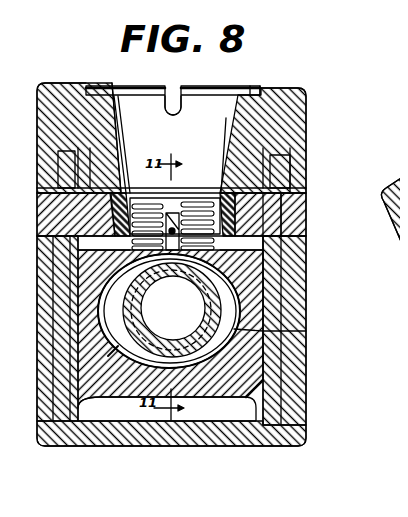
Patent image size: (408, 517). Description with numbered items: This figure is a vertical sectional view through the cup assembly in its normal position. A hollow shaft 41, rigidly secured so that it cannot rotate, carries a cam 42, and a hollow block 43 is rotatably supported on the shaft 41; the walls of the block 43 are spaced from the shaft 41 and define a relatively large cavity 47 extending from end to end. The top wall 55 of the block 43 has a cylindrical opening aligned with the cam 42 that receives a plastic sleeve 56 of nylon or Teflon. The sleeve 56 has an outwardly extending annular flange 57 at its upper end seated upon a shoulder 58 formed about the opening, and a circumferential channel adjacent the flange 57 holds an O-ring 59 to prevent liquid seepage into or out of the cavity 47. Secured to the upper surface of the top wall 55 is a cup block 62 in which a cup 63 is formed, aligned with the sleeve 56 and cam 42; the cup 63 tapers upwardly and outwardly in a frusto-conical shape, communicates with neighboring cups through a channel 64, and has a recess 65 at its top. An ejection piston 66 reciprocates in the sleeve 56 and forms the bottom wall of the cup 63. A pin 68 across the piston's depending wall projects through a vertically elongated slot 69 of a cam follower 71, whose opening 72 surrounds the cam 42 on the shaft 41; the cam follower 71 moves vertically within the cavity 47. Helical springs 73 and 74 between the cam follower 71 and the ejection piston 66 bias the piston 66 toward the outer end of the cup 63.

The hollow tube or shaft 41 is at (209, 403).
The cam 42 is at (299, 323).
The hollow casing or block 43 is at (299, 274).
The cavity 47 is at (199, 400).
The top wall 55 is at (299, 210).
The sleeve or insert 56 is at (83, 214).
The annular flange 57 is at (82, 168).
The shoulder 58 is at (265, 168).
The O-ring 59 is at (31, 186).
The cup block 62 is at (293, 118).
The cup or receptacle 63 is at (197, 98).
The channel 64 is at (163, 96).
The recess 65 is at (249, 80).
The ejection piston 66 is at (206, 186).
The pin 68 is at (128, 233).
The slot 69 is at (205, 232).
The cam follower 71 is at (114, 360).
The opening 72 is at (84, 400).
The helical spring 73 is at (136, 185).
The helical spring 74 is at (190, 187).